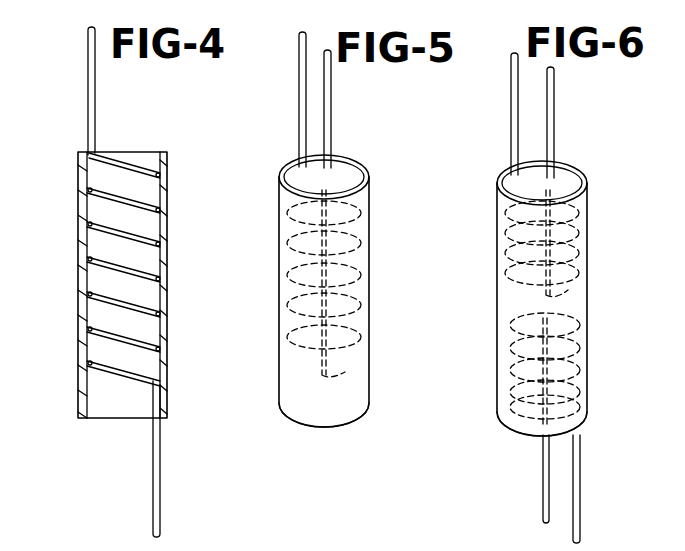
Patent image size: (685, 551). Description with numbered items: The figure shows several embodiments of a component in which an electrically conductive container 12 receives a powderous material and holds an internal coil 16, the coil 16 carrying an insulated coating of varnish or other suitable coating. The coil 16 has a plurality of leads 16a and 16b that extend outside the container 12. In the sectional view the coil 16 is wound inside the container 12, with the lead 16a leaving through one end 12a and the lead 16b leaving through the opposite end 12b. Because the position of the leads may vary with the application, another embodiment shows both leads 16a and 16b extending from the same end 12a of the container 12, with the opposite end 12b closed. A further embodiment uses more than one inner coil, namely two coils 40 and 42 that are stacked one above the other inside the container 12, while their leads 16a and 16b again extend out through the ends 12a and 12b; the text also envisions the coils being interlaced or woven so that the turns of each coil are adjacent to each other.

In FIG. 4, the electrically conductive container 12 is at (78, 243).
In FIG. 5, the electrically conductive container 12 is at (278, 248).
In FIG. 6, the electrically conductive container 12 is at (495, 258).
In FIG. 5, the end of container 12a is at (358, 162).
In FIG. 6, the end of container 12a is at (572, 166).
In FIG. 5, the end of container 12b is at (305, 427).
In FIG. 6, the end of container 12b is at (520, 432).
In FIG. 4, the internal coil 16 is at (92, 281).
In FIG. 5, the internal coil 16 is at (294, 280).
In FIG. 4, the lead 16a is at (88, 84).
In FIG. 5, the lead 16a is at (299, 84).
In FIG. 6, the lead 16a is at (511, 85).
In FIG. 4, the lead 16b is at (152, 495).
In FIG. 5, the lead 16b is at (332, 95).
In FIG. 6, the lead 16b is at (555, 96).
In FIG. 6, the coil 40 is at (588, 232).
In FIG. 6, the coil 42 is at (585, 375).